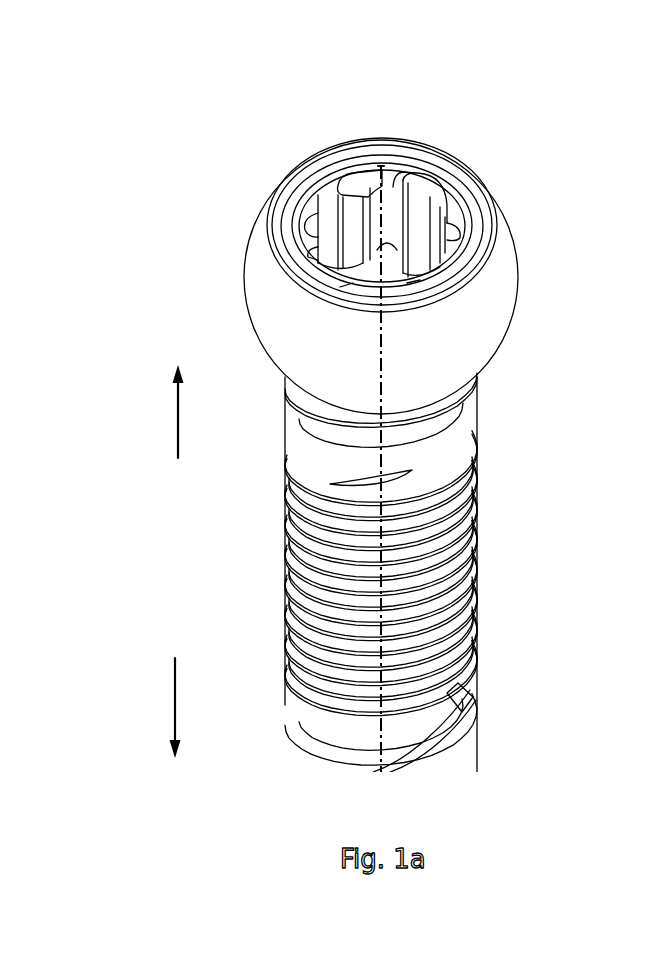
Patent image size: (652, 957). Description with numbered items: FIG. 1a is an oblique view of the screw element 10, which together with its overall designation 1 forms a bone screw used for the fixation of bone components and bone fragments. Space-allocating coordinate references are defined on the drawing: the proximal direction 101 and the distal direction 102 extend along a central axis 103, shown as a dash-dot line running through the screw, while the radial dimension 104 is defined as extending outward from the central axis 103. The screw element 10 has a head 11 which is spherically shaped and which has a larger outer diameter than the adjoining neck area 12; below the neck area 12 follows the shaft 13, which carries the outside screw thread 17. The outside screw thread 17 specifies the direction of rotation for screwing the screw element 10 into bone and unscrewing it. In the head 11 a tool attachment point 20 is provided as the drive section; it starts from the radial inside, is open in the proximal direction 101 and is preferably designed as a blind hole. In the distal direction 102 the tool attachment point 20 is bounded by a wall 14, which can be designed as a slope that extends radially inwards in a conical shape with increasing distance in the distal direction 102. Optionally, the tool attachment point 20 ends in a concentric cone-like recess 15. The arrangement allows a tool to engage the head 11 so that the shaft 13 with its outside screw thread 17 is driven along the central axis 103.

The screw 1 is at (148, 99).
The screw element 10 is at (368, 425).
The head 11 is at (262, 272).
The neck area 12 is at (447, 398).
The shaft 13 is at (477, 535).
The wall 14 is at (396, 278).
The concentric cone-like recess 15 is at (463, 217).
The outside screw thread 17 is at (381, 573).
The tool attachment point 20 is at (328, 230).
The proximal direction 101 is at (154, 411).
The distal direction 102 is at (153, 708).
The central axis 103 is at (381, 610).
The radial dimension 104 is at (378, 166).